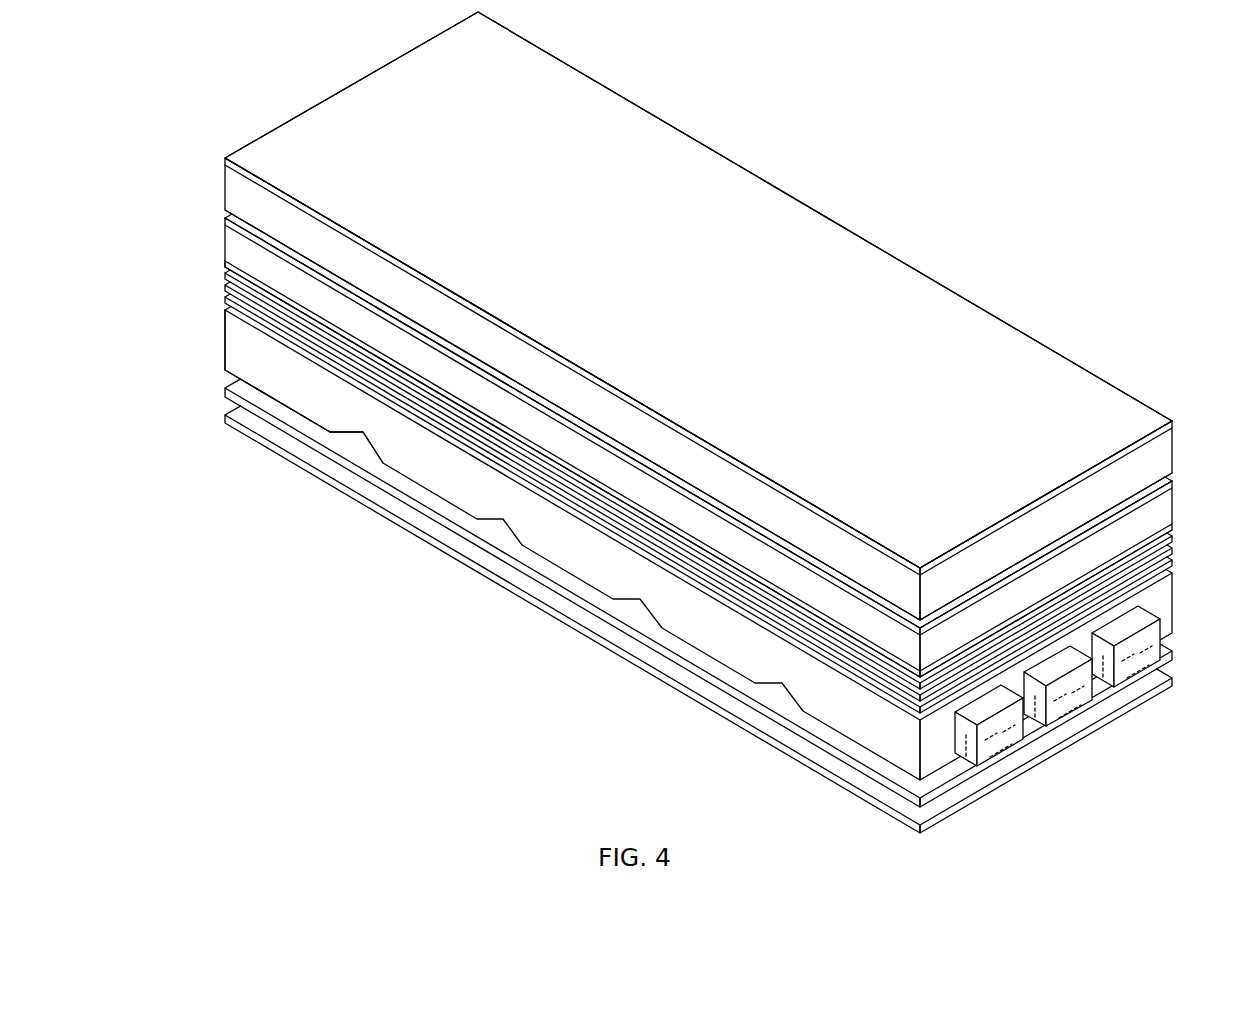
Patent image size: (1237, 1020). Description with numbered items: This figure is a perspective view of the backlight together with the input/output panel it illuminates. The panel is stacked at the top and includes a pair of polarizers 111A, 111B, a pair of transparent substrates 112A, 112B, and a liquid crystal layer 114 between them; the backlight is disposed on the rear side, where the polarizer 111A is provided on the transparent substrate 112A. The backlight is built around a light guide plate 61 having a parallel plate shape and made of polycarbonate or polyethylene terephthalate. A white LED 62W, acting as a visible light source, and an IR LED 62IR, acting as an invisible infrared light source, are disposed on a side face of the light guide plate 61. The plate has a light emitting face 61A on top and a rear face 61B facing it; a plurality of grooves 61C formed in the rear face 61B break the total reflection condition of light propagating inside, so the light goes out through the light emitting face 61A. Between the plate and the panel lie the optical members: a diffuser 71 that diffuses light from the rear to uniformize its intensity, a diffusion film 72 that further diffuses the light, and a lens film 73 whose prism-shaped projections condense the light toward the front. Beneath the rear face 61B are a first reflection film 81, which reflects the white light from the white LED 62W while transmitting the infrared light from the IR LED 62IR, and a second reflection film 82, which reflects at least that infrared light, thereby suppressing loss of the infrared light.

The polarizer 111B is at (222, 162).
The transparent substrate 112B is at (222, 190).
The liquid crystal layer 114 is at (220, 216).
The transparent substrate 112A is at (222, 221).
The polarizer 111A is at (222, 261).
The lens film 73 is at (222, 277).
The diffusion film 72 is at (222, 289).
The diffuser 71 is at (222, 305).
The light guide plate 61 is at (222, 350).
The light emitting face 61A is at (236, 408).
The rear face 61B is at (322, 437).
The grooves 61C is at (374, 450).
The first reflection film 81 is at (222, 393).
The second reflection film 82 is at (222, 418).
The IR LED 62IR is at (1015, 753).
The white LED 62W is at (1082, 712).